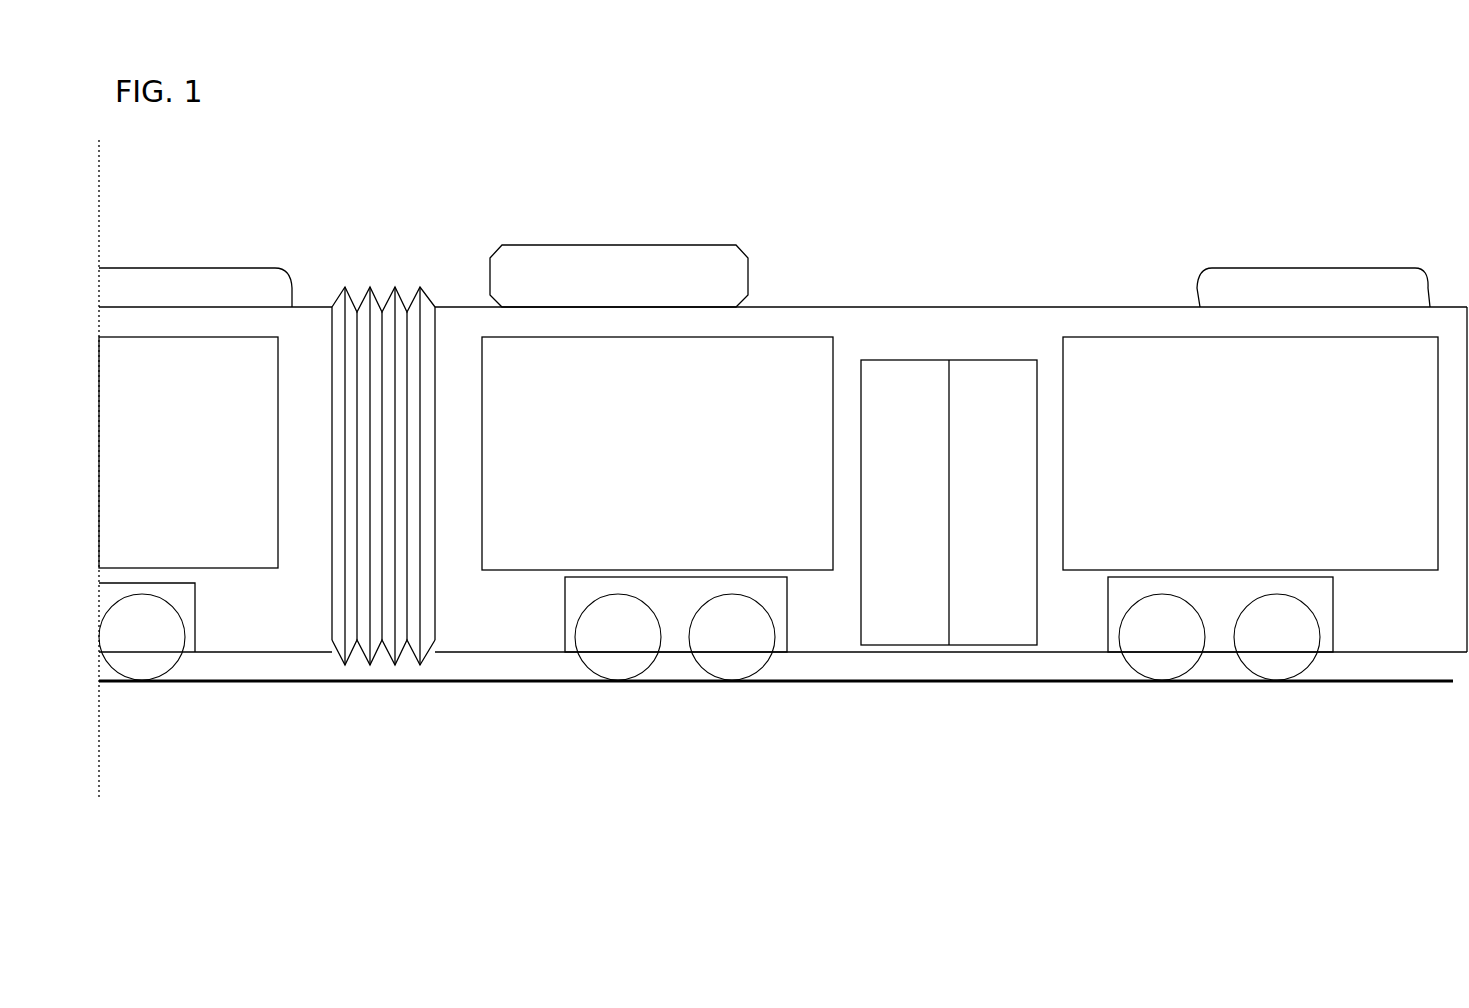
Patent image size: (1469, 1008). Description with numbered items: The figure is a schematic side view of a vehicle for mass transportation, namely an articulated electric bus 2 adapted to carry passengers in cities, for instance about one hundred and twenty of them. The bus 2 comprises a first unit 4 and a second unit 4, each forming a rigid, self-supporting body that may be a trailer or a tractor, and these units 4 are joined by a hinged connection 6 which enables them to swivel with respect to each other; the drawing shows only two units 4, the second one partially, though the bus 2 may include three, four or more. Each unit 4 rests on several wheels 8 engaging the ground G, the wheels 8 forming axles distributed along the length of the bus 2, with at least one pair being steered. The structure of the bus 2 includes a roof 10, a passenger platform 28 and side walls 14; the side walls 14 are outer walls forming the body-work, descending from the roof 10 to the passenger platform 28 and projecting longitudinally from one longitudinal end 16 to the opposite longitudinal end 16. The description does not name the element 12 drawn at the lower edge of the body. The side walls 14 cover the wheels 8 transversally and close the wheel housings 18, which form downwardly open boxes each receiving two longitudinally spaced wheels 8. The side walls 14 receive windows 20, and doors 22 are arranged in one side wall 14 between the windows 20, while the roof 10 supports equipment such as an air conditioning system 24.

The bus 2 is at (775, 131).
The unit 4 is at (268, 223).
The hinged connection 6 is at (383, 650).
The wheel 8 is at (145, 667).
The roof 10 is at (947, 307).
The underframe / floor 12 is at (268, 652).
The side wall 14 is at (968, 349).
The longitudinal end 16 is at (436, 347).
The wheel housing 18 is at (188, 607).
The window 20 is at (134, 409).
The door 22 is at (889, 489).
The air conditioning system 24 is at (605, 291).
The passenger platform 28 is at (1055, 655).
The ground G is at (833, 684).